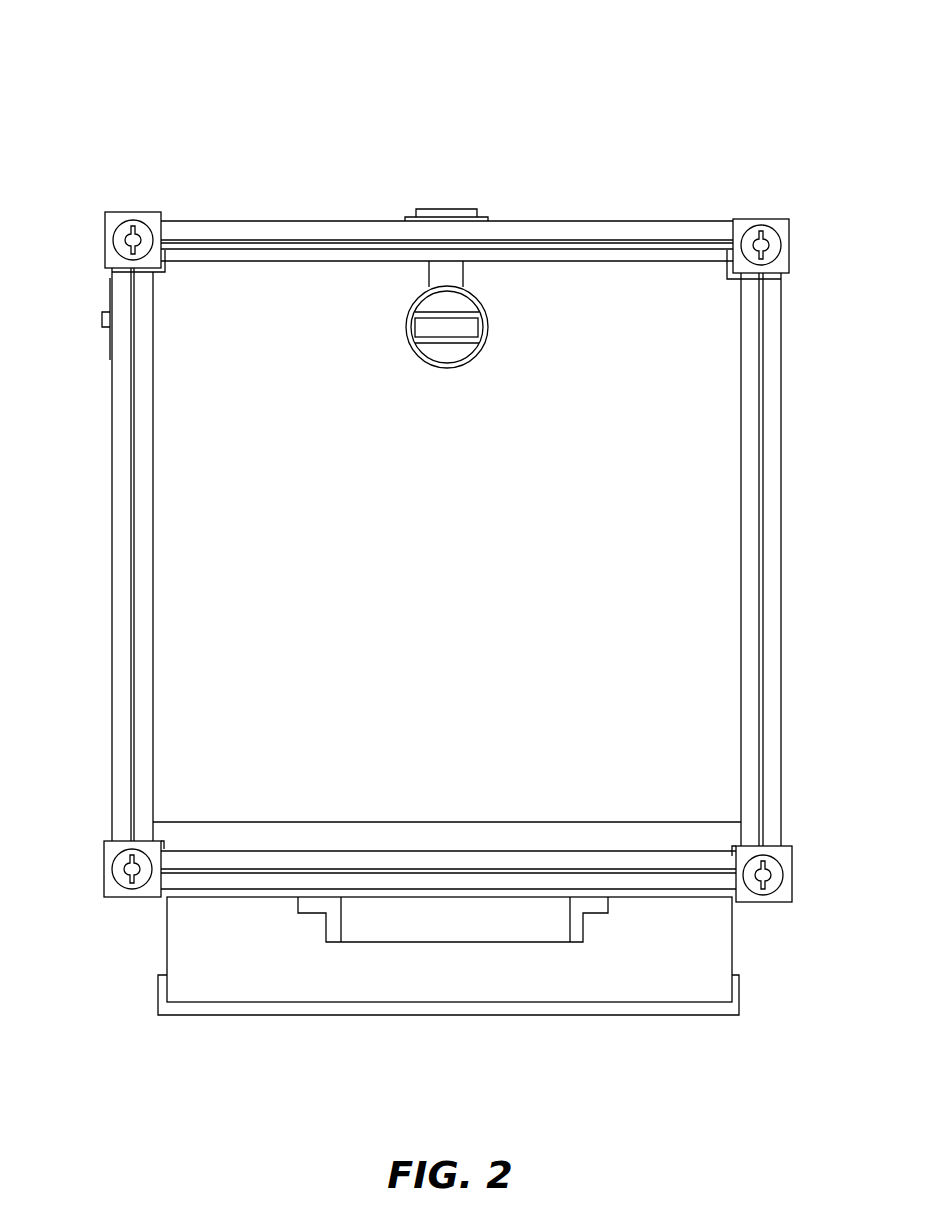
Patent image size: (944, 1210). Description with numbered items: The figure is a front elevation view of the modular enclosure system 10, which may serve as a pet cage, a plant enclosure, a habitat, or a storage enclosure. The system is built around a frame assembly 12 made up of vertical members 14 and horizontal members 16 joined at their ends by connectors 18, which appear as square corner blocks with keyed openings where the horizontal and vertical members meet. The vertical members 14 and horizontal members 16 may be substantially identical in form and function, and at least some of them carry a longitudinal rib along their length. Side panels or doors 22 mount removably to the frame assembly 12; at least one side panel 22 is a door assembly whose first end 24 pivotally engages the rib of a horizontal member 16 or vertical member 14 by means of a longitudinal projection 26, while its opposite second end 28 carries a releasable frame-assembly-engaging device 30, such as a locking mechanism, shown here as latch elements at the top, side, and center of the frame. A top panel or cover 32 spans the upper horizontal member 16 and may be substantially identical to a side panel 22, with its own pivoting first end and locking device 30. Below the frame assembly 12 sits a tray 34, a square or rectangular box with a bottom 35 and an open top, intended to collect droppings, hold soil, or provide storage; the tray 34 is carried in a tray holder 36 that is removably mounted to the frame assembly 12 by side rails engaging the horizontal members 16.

The modular enclosure system 10 is at (529, 88).
The frame assembly 12 is at (794, 300).
The vertical member 14 is at (145, 482).
The horizontal member 16 is at (238, 222).
The connector 18 is at (131, 218).
The side panel 22 is at (100, 440).
The first end 24 is at (428, 796).
The longitudinal projection 26 is at (343, 828).
The second end 28 is at (563, 272).
The releasable frame-assembly-engaging device 30 is at (452, 192).
The top panel 32 is at (513, 212).
The tray 34 is at (449, 949).
The bottom 35 is at (448, 922).
The tray holder 36 is at (271, 1015).